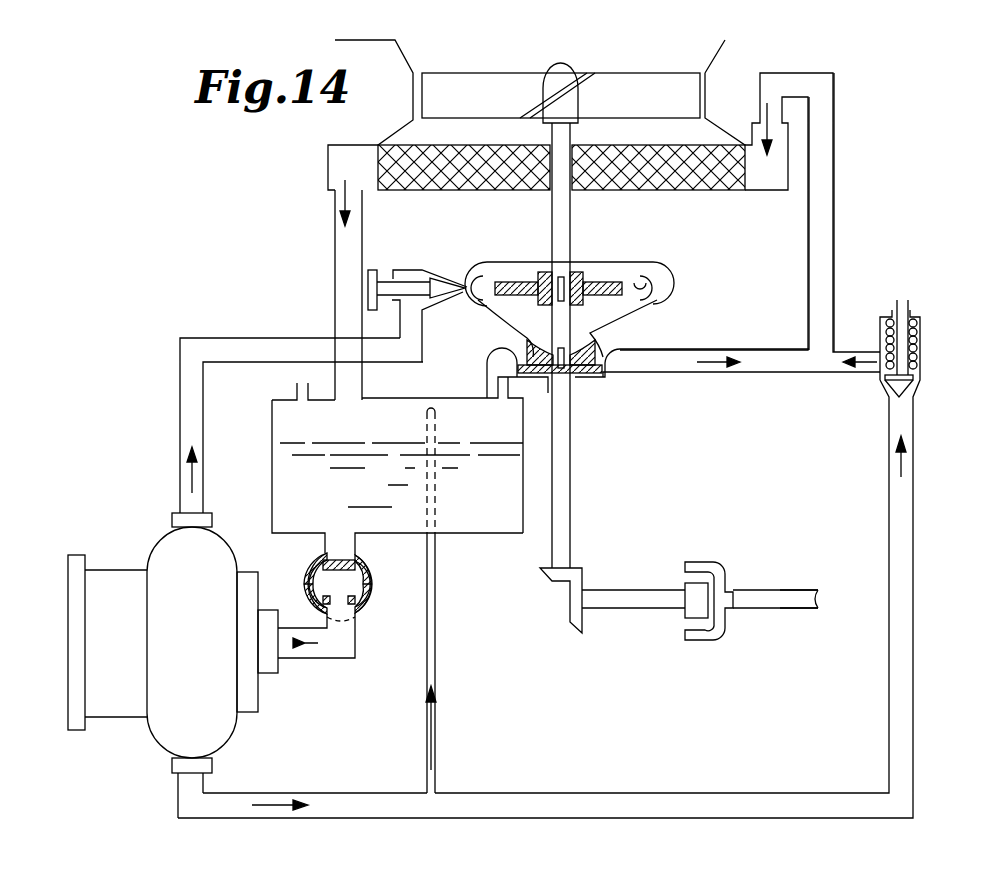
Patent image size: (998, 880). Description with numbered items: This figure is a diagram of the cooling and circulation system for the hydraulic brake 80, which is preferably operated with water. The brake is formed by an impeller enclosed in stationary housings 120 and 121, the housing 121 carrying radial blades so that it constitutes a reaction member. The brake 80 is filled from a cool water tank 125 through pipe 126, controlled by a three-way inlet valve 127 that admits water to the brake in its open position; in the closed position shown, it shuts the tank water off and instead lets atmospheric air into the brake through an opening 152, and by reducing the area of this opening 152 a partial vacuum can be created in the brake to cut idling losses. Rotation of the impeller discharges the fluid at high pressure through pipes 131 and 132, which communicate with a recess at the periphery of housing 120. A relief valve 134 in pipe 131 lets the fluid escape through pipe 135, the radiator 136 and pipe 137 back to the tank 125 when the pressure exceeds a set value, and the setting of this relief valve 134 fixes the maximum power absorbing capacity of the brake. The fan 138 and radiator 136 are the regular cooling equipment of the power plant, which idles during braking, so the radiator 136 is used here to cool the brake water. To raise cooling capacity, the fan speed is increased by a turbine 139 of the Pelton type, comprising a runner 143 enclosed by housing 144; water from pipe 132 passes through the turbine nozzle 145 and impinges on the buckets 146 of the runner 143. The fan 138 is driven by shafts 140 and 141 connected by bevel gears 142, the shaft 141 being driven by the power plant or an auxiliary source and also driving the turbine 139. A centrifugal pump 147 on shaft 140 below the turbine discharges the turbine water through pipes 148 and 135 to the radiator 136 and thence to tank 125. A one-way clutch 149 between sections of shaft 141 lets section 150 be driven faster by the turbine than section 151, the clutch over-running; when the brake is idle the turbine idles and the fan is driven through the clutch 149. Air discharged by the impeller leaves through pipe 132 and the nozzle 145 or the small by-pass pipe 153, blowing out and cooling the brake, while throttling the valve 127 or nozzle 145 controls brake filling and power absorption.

The fan 138 is at (623, 82).
The radiator 136 is at (700, 182).
The pipe 137 is at (348, 243).
The pipe 135 is at (828, 282).
The turbine 139 is at (607, 268).
The buckets 146 is at (640, 268).
The housing 144 is at (657, 293).
The runner 143 is at (613, 323).
The turbine nozzle 145 is at (445, 300).
The centrifugal pump 147 is at (590, 374).
The pipe 148 is at (692, 373).
The relief valve 134 is at (907, 387).
The shaft 140 is at (568, 450).
The pipe 132 is at (200, 472).
The cool water tank 125 is at (460, 523).
The small by-pass pipe 153 is at (437, 658).
The 3-way valve 127 is at (370, 563).
The opening 152 is at (373, 582).
The pipe 126 is at (313, 652).
The housing 121 is at (227, 565).
The hydraulic brake 80 is at (220, 723).
The housing 120 is at (160, 733).
The pipe 131 is at (278, 793).
The bevel gears 142 is at (573, 602).
The section 150 is at (615, 608).
The one-way clutch 149 is at (700, 622).
The section 151 is at (767, 607).
The shaft 141 is at (792, 592).